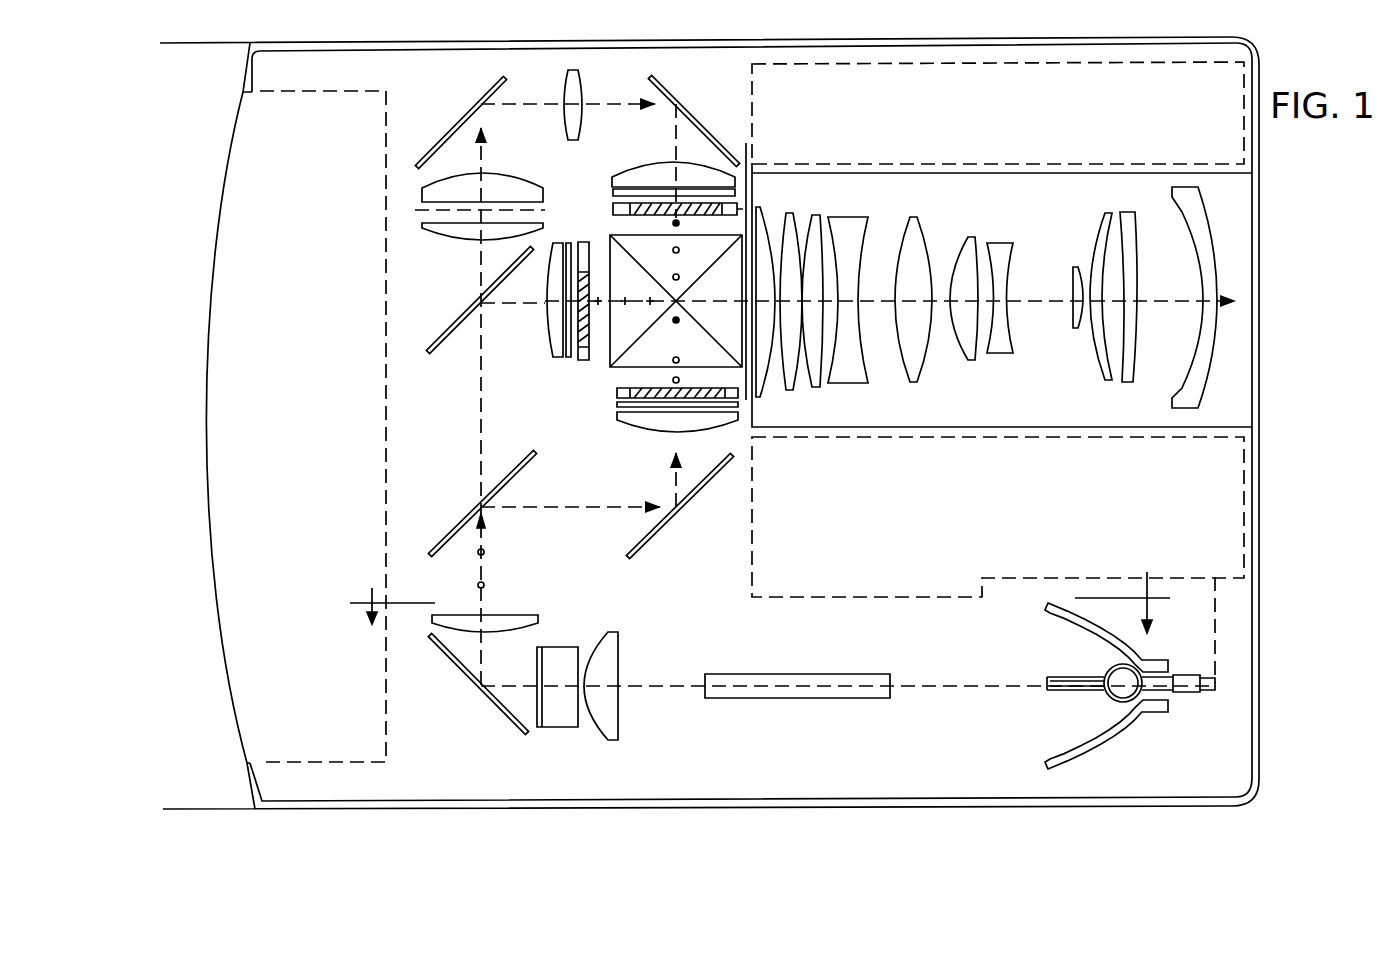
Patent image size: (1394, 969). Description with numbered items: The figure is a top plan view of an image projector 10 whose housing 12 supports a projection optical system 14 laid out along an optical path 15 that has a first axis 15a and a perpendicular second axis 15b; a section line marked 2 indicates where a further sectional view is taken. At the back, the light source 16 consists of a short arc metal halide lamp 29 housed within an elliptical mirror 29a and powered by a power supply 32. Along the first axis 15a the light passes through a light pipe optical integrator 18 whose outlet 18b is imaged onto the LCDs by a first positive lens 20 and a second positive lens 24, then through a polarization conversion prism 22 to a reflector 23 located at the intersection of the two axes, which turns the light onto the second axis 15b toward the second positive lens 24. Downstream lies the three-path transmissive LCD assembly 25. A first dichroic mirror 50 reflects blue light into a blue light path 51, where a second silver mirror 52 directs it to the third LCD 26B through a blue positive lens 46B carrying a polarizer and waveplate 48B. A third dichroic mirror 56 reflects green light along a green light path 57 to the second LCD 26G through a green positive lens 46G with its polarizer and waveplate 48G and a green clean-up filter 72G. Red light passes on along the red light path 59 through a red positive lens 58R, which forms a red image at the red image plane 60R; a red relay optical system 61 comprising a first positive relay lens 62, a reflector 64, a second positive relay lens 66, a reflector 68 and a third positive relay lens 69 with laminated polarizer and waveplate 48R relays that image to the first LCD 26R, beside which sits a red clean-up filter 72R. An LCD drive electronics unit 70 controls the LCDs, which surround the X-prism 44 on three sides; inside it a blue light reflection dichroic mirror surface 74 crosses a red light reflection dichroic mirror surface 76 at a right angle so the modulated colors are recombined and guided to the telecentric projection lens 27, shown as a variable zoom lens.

The section line 2- 2 is at (782, 627).
The image projector 10 is at (500, 823).
The housing 12 is at (667, 807).
The projection optical system 14 is at (460, 698).
The optical path 15 is at (940, 695).
The first axis 15a is at (995, 688).
The second axis 15b is at (481, 410).
The light source 16 is at (1133, 745).
The light pipe optical integrator 18 is at (777, 698).
The outlet 18b is at (705, 685).
The first positive lens 20 is at (620, 718).
The polarization conversion prism 22 is at (557, 727).
The reflector 23 is at (500, 713).
The second positive lens 24 is at (505, 615).
The three-path transmissive LCD assembly 25 is at (410, 464).
The first LCD 26R is at (627, 200).
The second LCD 26G is at (570, 272).
The third LCD 26B is at (637, 402).
The telecentric-type projection lens 27 is at (1208, 367).
The short arc metal halide lamp 29 is at (1083, 692).
The elliptical mirror 29a is at (1132, 648).
The power supply 32 is at (1140, 534).
The X-prism 44 is at (688, 353).
The green positive lens 46G is at (550, 348).
The blue positive lens 46B is at (630, 430).
The red polarizer and waveplate 48R is at (737, 195).
The green polarizer and waveplate 48G is at (568, 360).
The blue polarizer and waveplate 48B is at (745, 405).
The first dichroic mirror 50 is at (523, 470).
The blue light path 51 is at (567, 512).
The second silver mirror 52 is at (640, 552).
The third dichroic mirror 56 is at (440, 337).
The green light path 57 is at (510, 305).
The red positive lens 58R is at (448, 238).
The red light path 59 is at (480, 258).
The red image plane 60R is at (412, 208).
The red relay optical system 61 is at (540, 75).
The first positive relay lens 62 is at (493, 173).
The reflector 64 is at (453, 127).
The second positive relay lens 66 is at (573, 73).
The reflector 68 is at (668, 92).
The third positive relay lens 69 is at (661, 162).
The LCD drive electronics unit 70 is at (1050, 126).
The red clean-up filter 72R is at (735, 192).
The green clean-up filter 72G is at (567, 288).
The blue light reflection dichroic mirror surface 74 is at (614, 355).
The red light reflection dichroic mirror surface 76 is at (630, 262).